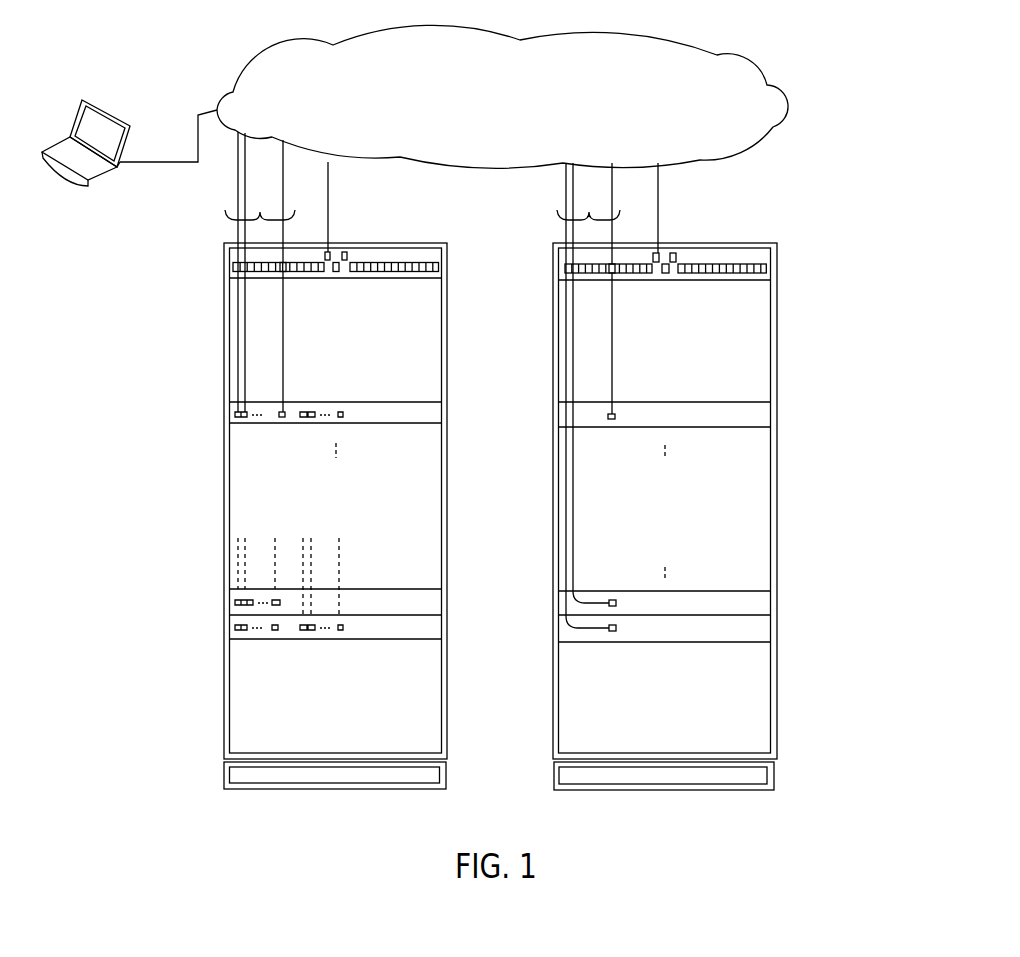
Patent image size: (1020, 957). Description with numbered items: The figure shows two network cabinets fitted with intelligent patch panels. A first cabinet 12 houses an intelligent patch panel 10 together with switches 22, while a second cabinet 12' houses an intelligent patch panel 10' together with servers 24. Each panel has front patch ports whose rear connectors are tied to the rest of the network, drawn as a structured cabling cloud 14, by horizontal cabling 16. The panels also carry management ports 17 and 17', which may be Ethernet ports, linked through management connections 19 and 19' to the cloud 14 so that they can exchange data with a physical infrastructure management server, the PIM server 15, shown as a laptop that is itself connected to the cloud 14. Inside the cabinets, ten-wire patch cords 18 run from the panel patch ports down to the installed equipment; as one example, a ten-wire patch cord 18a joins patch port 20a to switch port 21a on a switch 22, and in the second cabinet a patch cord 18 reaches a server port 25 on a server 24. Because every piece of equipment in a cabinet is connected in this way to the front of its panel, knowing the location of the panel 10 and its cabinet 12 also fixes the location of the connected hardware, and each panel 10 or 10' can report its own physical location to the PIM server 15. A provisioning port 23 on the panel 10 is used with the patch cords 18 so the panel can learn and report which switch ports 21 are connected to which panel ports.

The intelligent patch panel 10 is at (323, 268).
The intelligent patch panel 10' is at (711, 257).
The cabinet 12 is at (250, 516).
The cabinet 12' is at (714, 516).
The structured cabling cloud 14 is at (742, 57).
The PIM server 15 is at (108, 110).
The horizontal cabling 16 is at (422, 203).
The management ports 17 is at (370, 232).
The management ports 17' is at (698, 230).
The ten-wire patch cords 18 is at (225, 338).
The ten-wire patch cord 18a is at (300, 347).
The management connections 19 is at (360, 207).
The management connections 19' is at (697, 208).
The patch port 20a is at (283, 273).
The switch ports 21 is at (218, 417).
The switch port 21a is at (285, 410).
The switches 22 is at (432, 413).
The provisioning port 23 is at (337, 273).
The servers 24 is at (760, 418).
The server port 25 is at (615, 415).